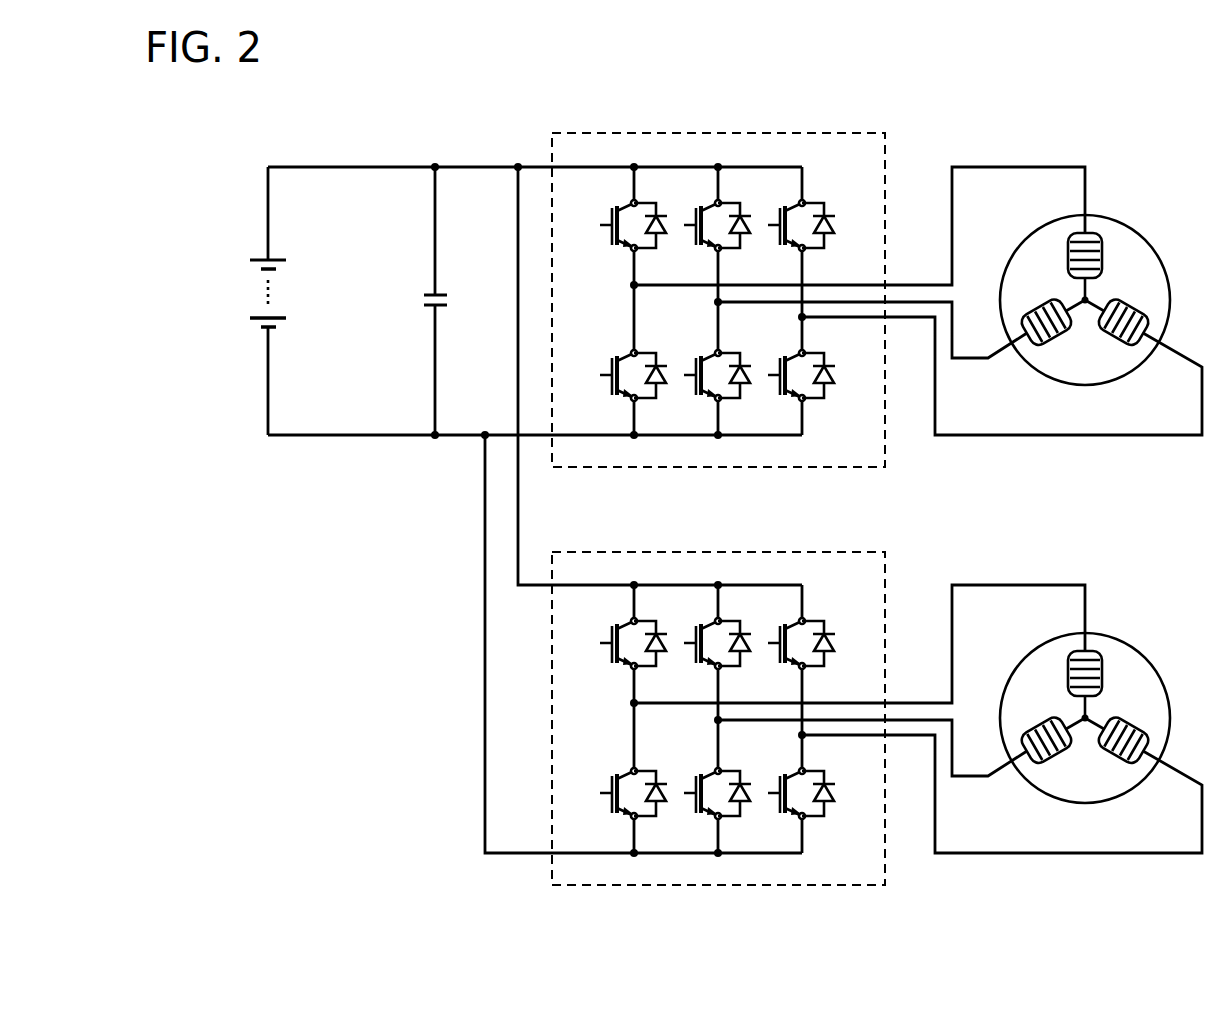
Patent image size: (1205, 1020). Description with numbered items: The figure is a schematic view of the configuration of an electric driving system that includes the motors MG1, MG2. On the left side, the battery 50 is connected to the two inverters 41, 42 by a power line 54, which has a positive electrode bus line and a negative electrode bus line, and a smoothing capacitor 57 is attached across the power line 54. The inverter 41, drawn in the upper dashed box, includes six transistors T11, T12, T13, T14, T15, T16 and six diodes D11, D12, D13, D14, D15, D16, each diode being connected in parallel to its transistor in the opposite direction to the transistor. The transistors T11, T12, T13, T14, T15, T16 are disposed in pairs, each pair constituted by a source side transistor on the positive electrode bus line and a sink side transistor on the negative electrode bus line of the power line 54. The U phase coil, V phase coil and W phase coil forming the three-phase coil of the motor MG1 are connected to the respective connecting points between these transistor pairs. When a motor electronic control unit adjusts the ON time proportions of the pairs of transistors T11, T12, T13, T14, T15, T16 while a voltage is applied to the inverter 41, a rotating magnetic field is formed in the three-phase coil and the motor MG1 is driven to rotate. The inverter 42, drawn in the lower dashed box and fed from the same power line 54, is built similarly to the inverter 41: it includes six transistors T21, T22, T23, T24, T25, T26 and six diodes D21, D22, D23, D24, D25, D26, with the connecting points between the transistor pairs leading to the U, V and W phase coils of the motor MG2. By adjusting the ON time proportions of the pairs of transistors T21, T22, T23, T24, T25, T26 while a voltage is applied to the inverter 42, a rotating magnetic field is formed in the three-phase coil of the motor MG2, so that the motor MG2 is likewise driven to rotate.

The battery 50 is at (263, 257).
The smoothing capacitor 57 is at (430, 295).
The power line 54 is at (497, 166).
The inverter 41 is at (718, 132).
The inverter 42 is at (720, 551).
The transistor T11 is at (610, 216).
The transistor T12 is at (694, 216).
The transistor T13 is at (778, 216).
The transistor T14 is at (610, 366).
The transistor T15 is at (694, 366).
The transistor T16 is at (778, 366).
The diode D11 is at (659, 234).
The diode D12 is at (743, 234).
The diode D13 is at (827, 234).
The diode D14 is at (659, 384).
The diode D15 is at (743, 384).
The diode D16 is at (827, 384).
The transistor T21 is at (610, 634).
The transistor T22 is at (694, 634).
The transistor T23 is at (778, 634).
The transistor T24 is at (610, 784).
The transistor T25 is at (694, 784).
The transistor T26 is at (778, 784).
The diode D21 is at (659, 652).
The diode D22 is at (743, 652).
The diode D23 is at (827, 652).
The diode D24 is at (659, 802).
The diode D25 is at (743, 802).
The diode D26 is at (827, 802).
The motor MG1 is at (1125, 222).
The motor MG2 is at (1125, 640).